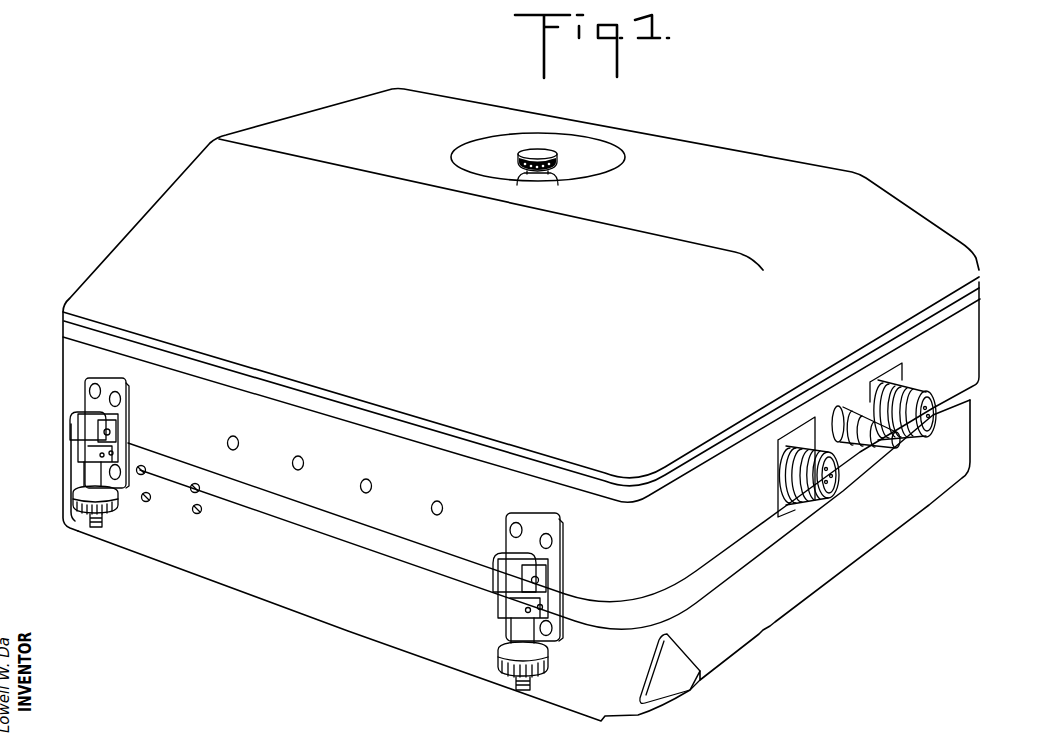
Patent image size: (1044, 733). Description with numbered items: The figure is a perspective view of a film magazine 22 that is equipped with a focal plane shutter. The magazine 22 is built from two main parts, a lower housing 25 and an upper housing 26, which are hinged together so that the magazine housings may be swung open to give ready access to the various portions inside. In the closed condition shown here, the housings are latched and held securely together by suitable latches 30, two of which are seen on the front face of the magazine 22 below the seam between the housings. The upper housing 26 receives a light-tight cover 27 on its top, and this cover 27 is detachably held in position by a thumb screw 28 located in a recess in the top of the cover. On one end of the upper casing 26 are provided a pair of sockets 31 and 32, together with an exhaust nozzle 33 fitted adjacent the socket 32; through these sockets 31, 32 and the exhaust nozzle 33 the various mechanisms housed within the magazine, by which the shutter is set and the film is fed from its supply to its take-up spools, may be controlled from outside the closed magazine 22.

The magazine 22 is at (871, 161).
The lower housing 25 is at (960, 432).
The upper housing 26 is at (968, 322).
The light-tight cover 27 is at (746, 162).
The thumb screw 28 is at (543, 153).
The latches 30 is at (70, 434).
The socket 31 is at (806, 500).
The socket 32 is at (903, 438).
The exhaust nozzle 33 is at (888, 447).